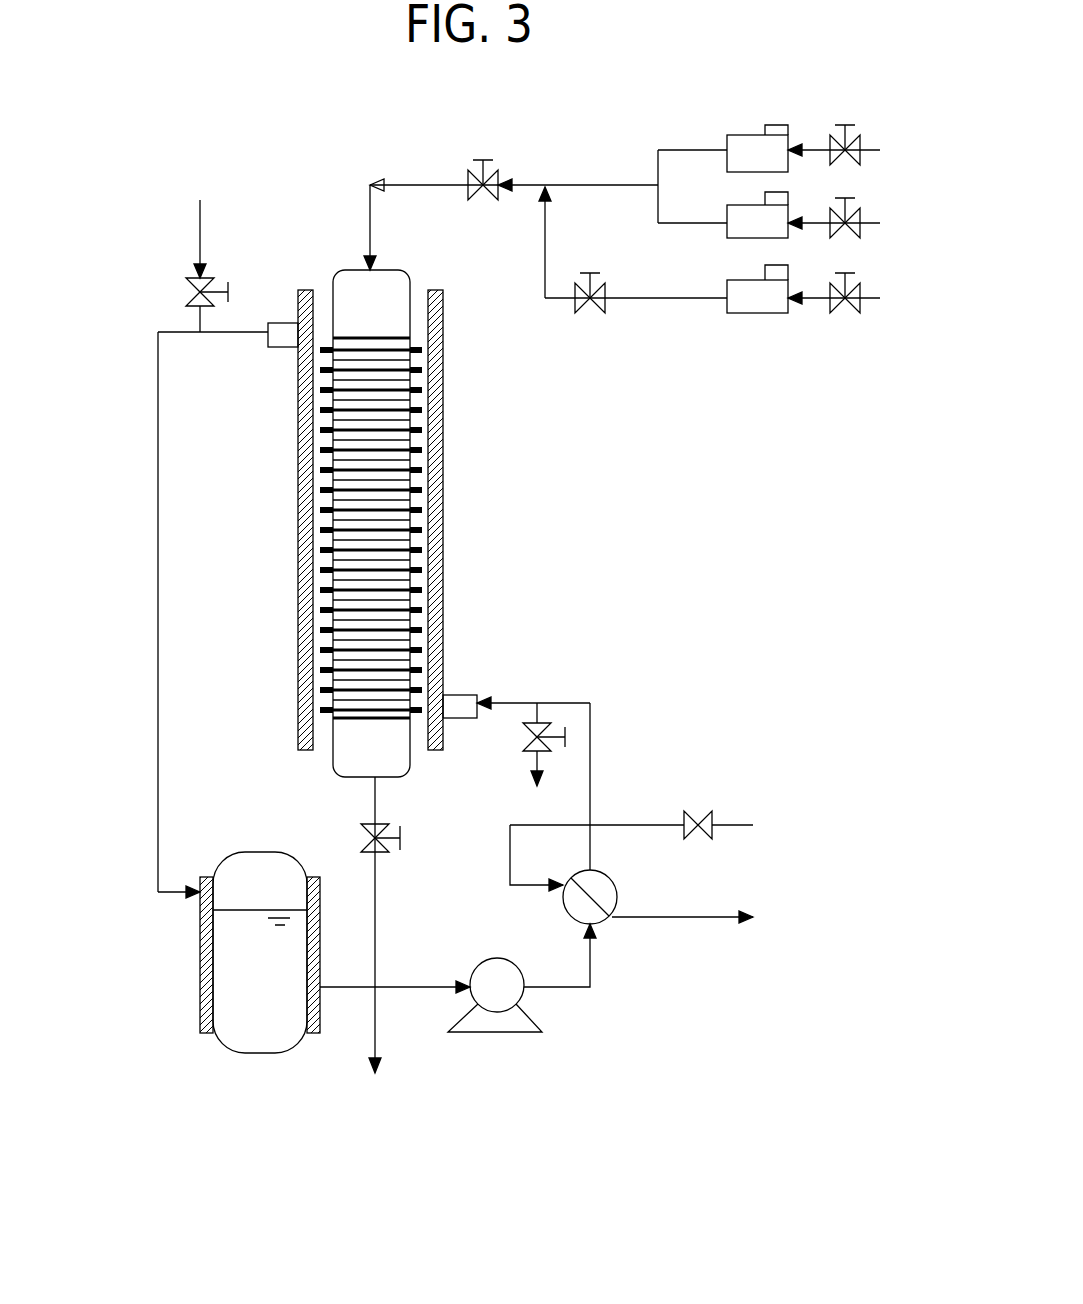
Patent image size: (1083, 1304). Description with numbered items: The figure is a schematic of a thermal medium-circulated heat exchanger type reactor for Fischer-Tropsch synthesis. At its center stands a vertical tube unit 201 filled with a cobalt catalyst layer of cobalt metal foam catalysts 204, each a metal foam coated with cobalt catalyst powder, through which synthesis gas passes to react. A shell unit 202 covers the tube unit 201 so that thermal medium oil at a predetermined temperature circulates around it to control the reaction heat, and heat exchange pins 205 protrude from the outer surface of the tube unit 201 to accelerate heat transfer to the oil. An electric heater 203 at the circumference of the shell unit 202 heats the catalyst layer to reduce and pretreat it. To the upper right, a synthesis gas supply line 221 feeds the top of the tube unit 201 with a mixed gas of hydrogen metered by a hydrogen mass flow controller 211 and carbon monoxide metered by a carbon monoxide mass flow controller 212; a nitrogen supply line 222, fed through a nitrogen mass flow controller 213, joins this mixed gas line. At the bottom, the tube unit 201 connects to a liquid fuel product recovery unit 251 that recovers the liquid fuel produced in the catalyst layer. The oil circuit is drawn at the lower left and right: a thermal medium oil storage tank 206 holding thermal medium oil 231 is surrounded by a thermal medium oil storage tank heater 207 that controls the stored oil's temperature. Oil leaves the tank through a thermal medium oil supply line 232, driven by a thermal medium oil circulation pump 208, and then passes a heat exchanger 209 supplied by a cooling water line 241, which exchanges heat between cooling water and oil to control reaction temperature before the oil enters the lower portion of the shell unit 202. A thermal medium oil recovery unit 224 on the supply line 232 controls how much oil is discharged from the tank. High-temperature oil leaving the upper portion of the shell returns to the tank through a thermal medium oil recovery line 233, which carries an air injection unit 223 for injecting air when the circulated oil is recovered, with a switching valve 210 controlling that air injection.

The tube unit 201 is at (443, 313).
The shell unit 202 is at (443, 373).
The electric heater 203 is at (443, 432).
The cobalt metal foam catalyst 204 is at (443, 497).
The heat exchange pin 205 is at (443, 547).
The thermal medium oil storage tank 206 is at (240, 852).
The thermal medium oil storage tank heater 207 is at (200, 990).
The thermal medium oil circulation pump 208 is at (497, 1032).
The heat exchanger 209 is at (612, 880).
The switching valve 210 is at (186, 292).
The hydrogen mass flow controller 211 is at (733, 135).
The carbon monoxide mass flow controller 212 is at (727, 233).
The nitrogen mass flow controller 213 is at (742, 313).
The synthesis gas supply line 221 is at (590, 183).
The nitrogen supply line 222 is at (668, 300).
The air injection unit 223 is at (200, 225).
The thermal medium oil recovery unit 224 is at (545, 765).
The thermal medium oil 231 is at (258, 1030).
The thermal medium oil supply line 232 is at (572, 703).
The thermal medium oil recovery line 233 is at (158, 640).
The cooling water line 241 is at (735, 825).
The liquid fuel product recovery unit 251 is at (375, 918).